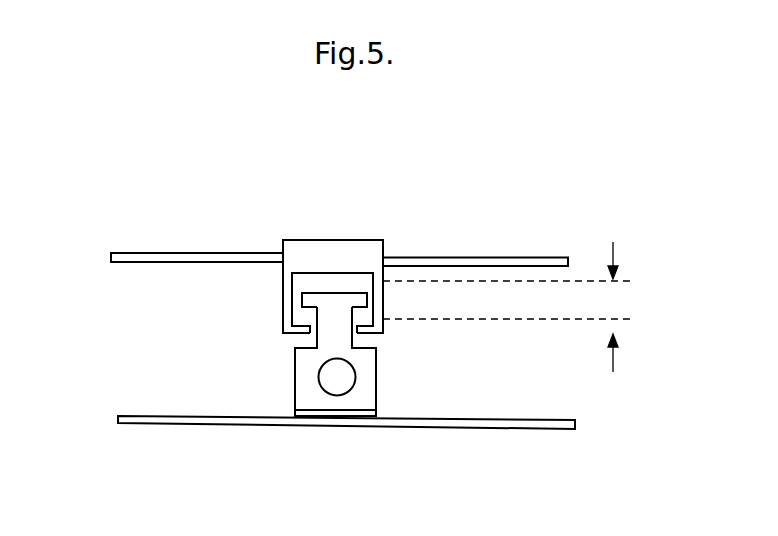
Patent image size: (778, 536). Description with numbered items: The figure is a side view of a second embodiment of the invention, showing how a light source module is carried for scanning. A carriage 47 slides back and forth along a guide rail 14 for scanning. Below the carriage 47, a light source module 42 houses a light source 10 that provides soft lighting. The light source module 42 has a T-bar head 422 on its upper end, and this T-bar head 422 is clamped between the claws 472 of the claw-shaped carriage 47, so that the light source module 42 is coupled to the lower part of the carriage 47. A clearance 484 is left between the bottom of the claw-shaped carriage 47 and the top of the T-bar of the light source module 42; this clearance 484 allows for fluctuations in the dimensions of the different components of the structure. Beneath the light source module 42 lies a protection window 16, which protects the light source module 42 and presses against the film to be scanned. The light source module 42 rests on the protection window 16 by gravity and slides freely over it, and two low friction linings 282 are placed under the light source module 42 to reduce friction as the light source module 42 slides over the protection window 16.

The light source 10 is at (345, 377).
The guide rail 14 is at (121, 253).
The protection window 16 is at (118, 418).
The light source module 42 is at (295, 377).
The T-bar head 422 is at (337, 293).
The carriage 47 is at (302, 257).
The claws 472 is at (283, 303).
The clearance 484 is at (540, 307).
The low friction linings 282 is at (378, 414).